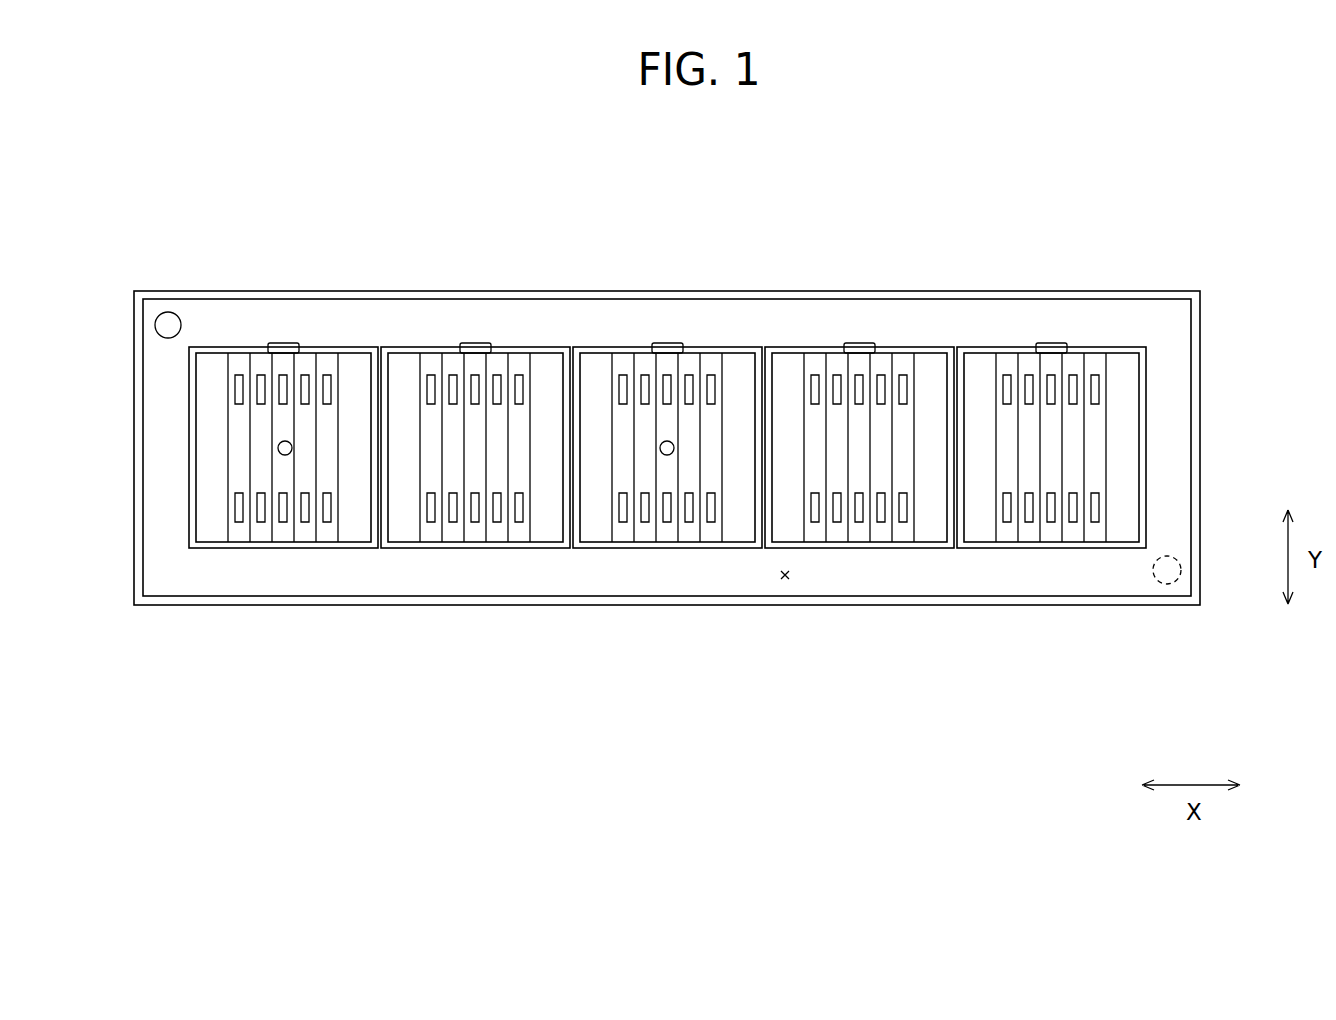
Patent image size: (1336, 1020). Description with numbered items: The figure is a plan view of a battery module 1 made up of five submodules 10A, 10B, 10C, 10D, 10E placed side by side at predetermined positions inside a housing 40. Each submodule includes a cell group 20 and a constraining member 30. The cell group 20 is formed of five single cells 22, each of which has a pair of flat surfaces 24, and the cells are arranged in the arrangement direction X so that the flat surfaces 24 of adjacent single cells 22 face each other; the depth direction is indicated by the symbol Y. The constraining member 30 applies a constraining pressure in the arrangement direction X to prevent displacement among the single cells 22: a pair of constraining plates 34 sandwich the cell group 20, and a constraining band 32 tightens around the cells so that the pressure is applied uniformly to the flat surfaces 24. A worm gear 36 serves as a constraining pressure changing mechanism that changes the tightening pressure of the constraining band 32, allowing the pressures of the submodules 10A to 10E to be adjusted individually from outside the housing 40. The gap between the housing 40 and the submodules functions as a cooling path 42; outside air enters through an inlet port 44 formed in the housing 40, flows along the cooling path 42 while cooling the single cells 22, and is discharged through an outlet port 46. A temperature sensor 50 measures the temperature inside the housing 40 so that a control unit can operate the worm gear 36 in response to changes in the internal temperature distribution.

The battery module 1 is at (1175, 152).
The submodule 10A is at (369, 337).
The submodule 10B is at (568, 337).
The submodule 10C is at (726, 335).
The submodule 10D is at (906, 335).
The submodule 10E is at (1108, 335).
The cell group 20 is at (190, 657).
The single cell 22 is at (572, 622).
The flat surface 24 is at (258, 420).
The constraining member 30 is at (200, 243).
The constraining band 32 is at (242, 357).
The constraining plate 34 is at (208, 358).
The worm gear 36 is at (283, 343).
The housing 40 is at (1003, 292).
The cooling path 42 is at (785, 580).
The inlet port 44 is at (168, 312).
The outlet port 46 is at (1160, 585).
The temperature sensor 50 is at (292, 447).